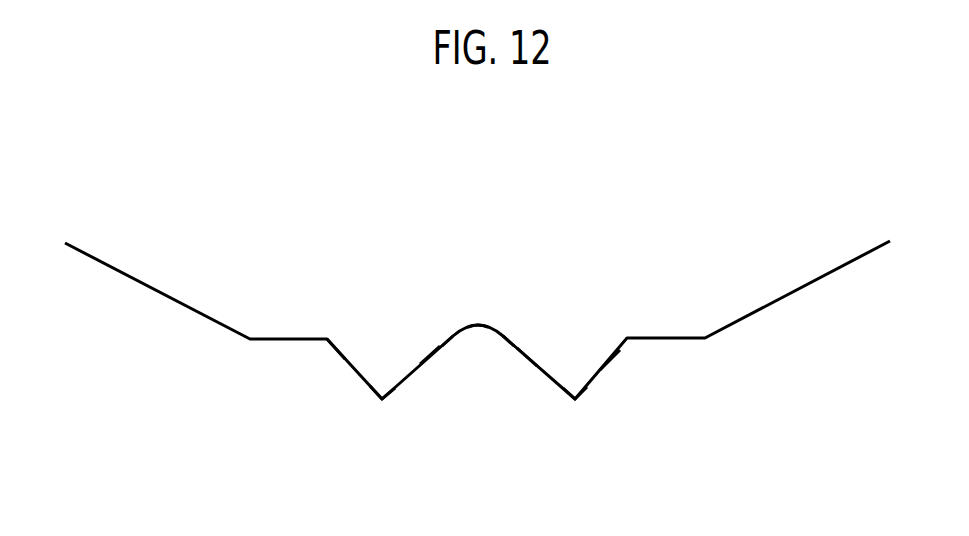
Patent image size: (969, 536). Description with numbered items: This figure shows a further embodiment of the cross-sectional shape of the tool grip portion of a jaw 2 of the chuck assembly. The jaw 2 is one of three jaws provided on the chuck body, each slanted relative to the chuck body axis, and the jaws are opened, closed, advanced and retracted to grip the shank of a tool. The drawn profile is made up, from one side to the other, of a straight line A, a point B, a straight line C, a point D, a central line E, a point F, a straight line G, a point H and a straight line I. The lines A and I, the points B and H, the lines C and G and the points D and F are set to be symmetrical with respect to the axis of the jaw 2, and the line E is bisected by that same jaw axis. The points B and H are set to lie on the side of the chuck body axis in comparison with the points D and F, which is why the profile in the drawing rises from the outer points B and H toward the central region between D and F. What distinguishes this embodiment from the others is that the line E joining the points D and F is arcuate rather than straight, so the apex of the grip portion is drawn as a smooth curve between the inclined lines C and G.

The jaw 2 is at (798, 292).
The line A is at (337, 360).
The point B is at (382, 399).
The line C is at (432, 353).
The point D is at (452, 335).
The line E is at (477, 326).
The point F is at (503, 333).
The line G is at (527, 355).
The point H is at (575, 399).
The line I is at (610, 360).